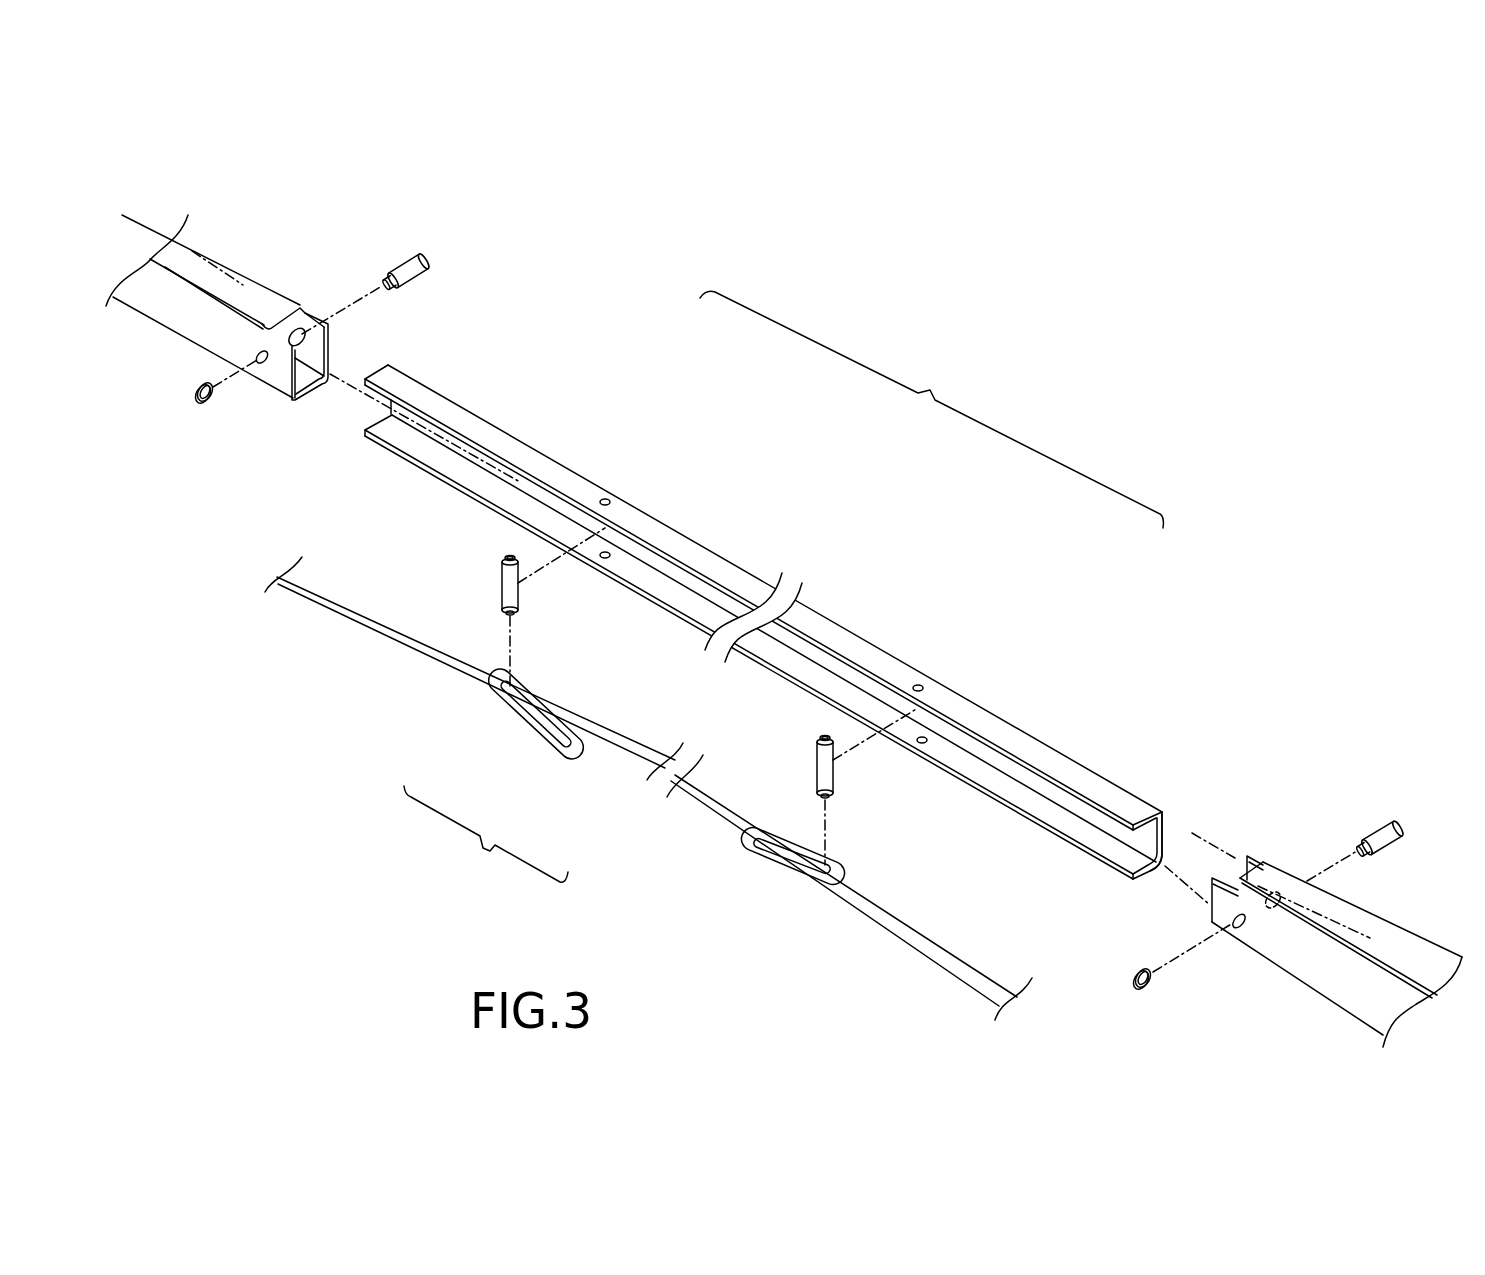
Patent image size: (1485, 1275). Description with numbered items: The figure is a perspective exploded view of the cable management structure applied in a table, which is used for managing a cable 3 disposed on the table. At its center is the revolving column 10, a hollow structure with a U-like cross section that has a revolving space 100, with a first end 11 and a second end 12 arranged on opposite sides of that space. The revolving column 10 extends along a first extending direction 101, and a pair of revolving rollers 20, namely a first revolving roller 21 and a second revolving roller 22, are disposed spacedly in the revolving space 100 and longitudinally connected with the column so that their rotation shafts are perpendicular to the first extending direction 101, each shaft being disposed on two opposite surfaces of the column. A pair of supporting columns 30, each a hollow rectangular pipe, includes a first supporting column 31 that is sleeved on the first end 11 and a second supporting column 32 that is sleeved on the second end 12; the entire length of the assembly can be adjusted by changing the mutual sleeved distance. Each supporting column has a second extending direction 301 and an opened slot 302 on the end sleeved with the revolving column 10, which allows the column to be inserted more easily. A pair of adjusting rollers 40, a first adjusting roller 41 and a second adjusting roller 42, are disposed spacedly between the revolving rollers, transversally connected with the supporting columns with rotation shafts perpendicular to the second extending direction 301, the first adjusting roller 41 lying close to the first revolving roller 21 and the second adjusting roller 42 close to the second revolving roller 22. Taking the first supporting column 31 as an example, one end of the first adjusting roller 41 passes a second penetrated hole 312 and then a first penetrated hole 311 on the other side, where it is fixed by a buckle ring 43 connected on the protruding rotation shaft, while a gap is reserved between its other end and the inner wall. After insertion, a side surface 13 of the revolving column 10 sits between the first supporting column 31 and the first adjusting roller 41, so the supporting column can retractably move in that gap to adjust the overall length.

The cable 3 is at (327, 608).
The revolving column 10 is at (690, 557).
The first end 11 is at (1142, 796).
The second end 12 is at (373, 365).
The side surface 13 is at (1162, 830).
The pair of revolving rollers 20 is at (656, 710).
The first revolving roller 21 is at (820, 765).
The second revolving roller 22 is at (503, 585).
The pair of supporting columns 30 is at (1262, 916).
The first supporting column 31 is at (1317, 967).
The second supporting column 32 is at (177, 320).
The pair of adjusting rollers 40 is at (853, 567).
The first adjusting roller 41 is at (1378, 832).
The second adjusting roller 42 is at (427, 268).
The buckle ring 43 is at (1137, 977).
The revolving space 100 is at (769, 604).
The first extending direction 101 is at (353, 390).
The second extending direction 301 is at (203, 258).
The opened slot 302 is at (313, 320).
The first penetrated hole 311 is at (1235, 923).
The second penetrated hole 312 is at (1262, 910).